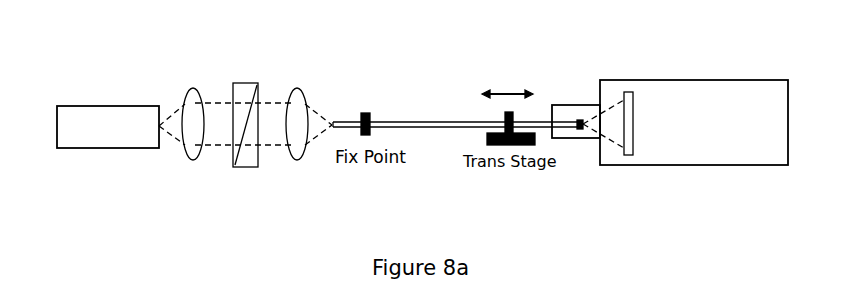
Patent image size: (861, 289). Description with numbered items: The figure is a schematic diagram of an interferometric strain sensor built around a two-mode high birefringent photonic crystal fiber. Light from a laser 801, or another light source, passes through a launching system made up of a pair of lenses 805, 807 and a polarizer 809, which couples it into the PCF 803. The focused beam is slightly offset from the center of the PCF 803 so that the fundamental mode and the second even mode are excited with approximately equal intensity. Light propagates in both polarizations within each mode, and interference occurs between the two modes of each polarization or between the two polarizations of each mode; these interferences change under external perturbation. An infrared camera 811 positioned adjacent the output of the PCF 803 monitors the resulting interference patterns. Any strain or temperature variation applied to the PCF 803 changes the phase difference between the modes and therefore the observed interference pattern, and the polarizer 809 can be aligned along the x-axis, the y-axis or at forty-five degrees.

The laser 801 is at (70, 110).
The PCF 803 is at (384, 121).
The lens 805 is at (193, 95).
The lens 807 is at (298, 92).
The polarizer 809 is at (233, 153).
The infrared camera 811 is at (663, 80).